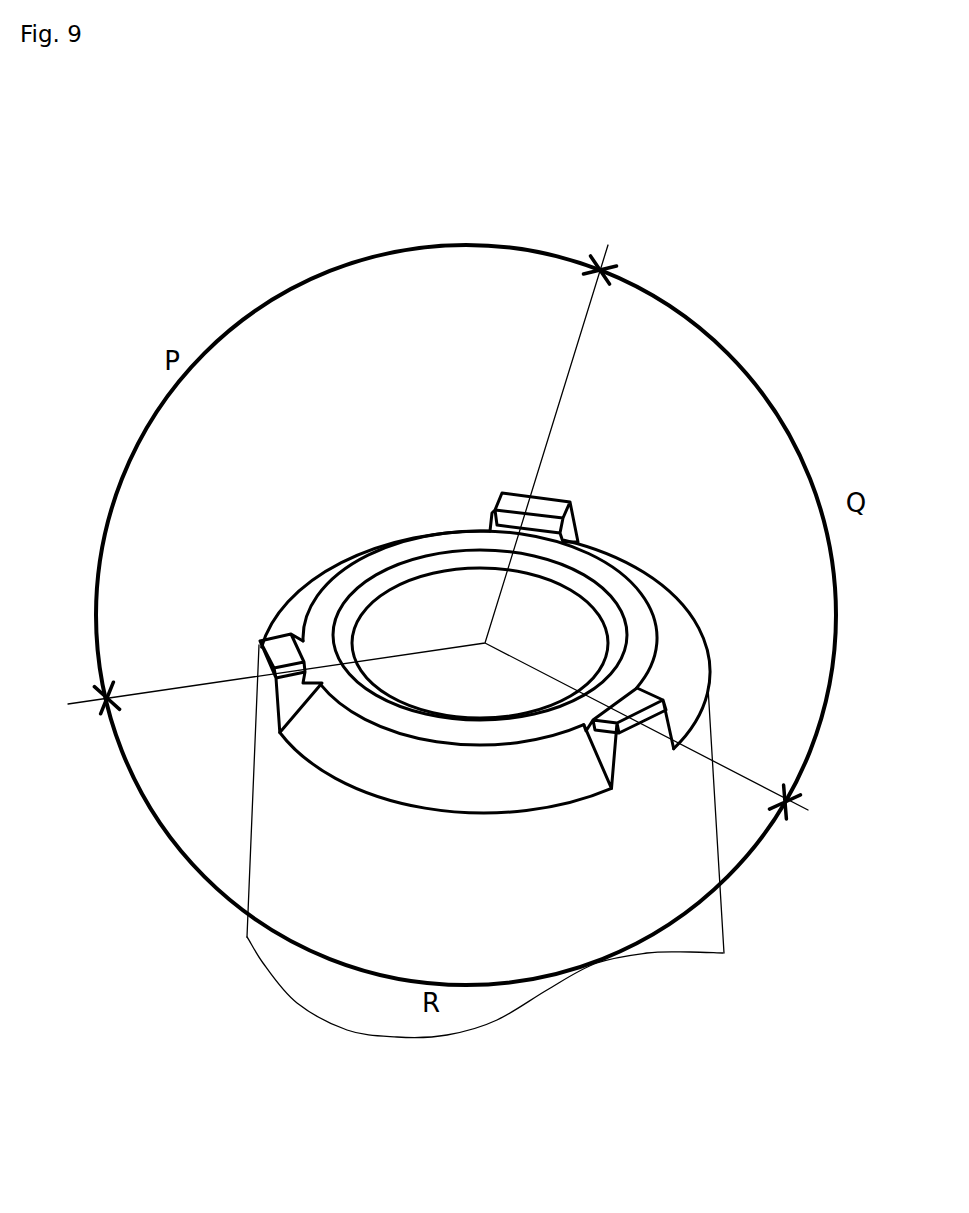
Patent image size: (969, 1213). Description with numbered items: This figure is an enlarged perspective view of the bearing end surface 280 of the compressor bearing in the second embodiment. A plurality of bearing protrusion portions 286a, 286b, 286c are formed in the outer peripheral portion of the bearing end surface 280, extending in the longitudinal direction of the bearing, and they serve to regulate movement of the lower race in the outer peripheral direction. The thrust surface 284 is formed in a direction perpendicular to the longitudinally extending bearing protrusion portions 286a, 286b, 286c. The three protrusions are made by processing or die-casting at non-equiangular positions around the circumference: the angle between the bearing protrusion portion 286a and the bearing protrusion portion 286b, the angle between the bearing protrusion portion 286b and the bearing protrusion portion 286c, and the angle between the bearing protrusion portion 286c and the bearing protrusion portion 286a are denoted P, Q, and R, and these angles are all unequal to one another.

The bearing end surface 280 is at (568, 822).
The thrust surface 284 is at (370, 572).
The bearing protrusion portion 286a is at (291, 692).
The bearing protrusion portion 286b is at (552, 532).
The bearing protrusion portion 286c is at (628, 743).